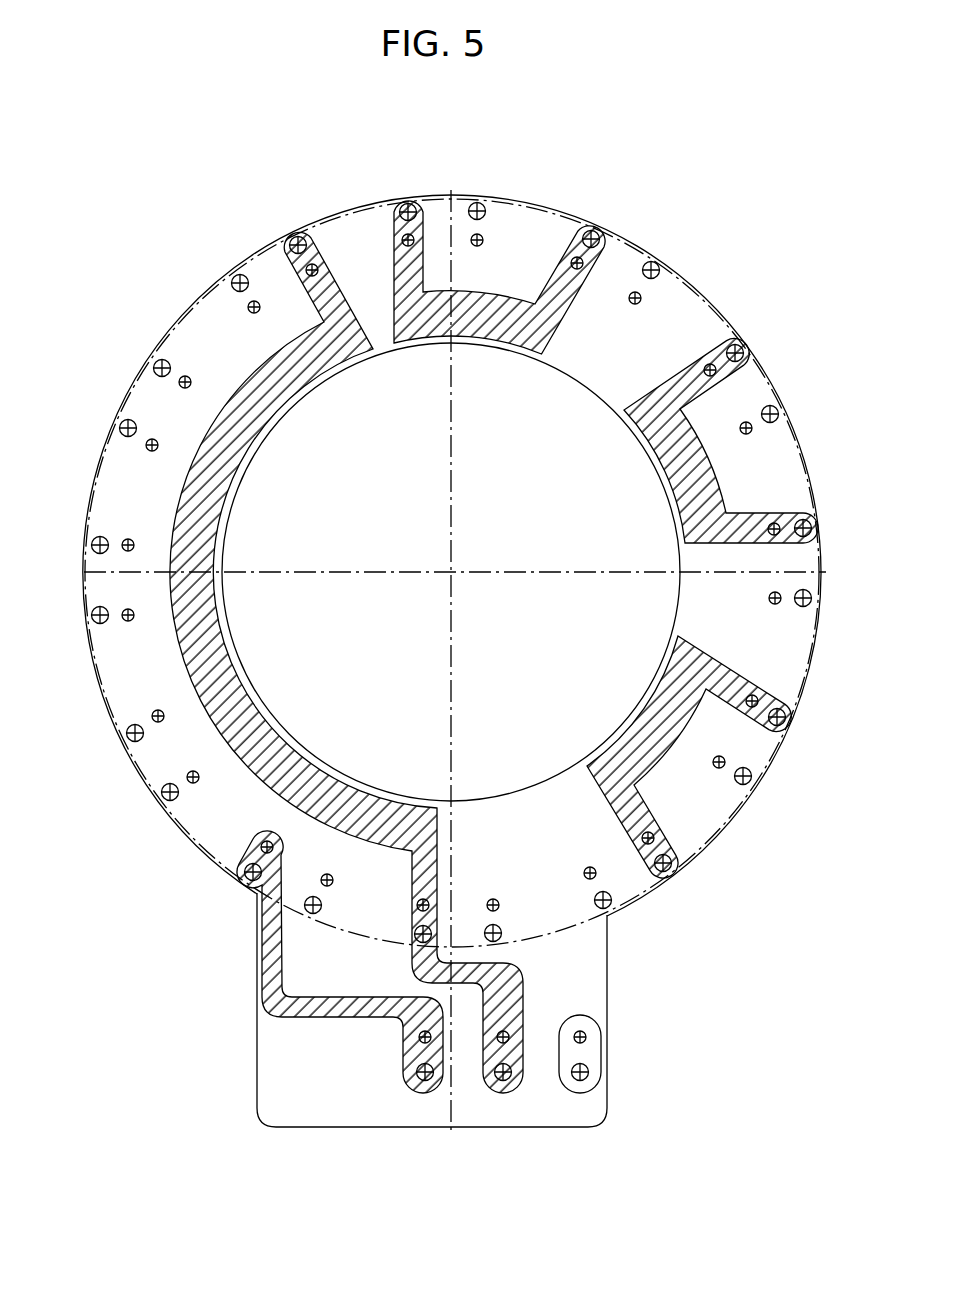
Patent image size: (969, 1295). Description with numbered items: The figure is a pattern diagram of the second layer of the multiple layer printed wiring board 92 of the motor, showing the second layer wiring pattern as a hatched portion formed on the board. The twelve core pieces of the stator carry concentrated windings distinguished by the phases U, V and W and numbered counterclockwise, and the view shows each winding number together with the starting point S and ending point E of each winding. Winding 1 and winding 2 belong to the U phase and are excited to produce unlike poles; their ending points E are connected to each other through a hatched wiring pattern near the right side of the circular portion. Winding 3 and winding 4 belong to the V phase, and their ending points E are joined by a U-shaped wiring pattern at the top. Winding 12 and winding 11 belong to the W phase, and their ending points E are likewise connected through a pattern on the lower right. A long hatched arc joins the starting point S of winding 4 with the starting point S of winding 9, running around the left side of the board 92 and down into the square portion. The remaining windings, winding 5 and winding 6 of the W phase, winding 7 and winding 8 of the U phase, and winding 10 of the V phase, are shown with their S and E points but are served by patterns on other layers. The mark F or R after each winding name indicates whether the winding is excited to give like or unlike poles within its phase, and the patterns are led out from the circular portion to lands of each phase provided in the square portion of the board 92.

The winding number 1 is at (798, 462).
The winding number 2 is at (697, 304).
The winding number 3 is at (538, 213).
The winding number 4 is at (347, 218).
The winding number 5 is at (192, 316).
The winding number 6 is at (95, 479).
The winding number 7 is at (102, 682).
The winding number 8 is at (202, 843).
The winding number 9 is at (363, 923).
The winding number 10 is at (561, 922).
The winding number 11 is at (716, 832).
The winding number 12 is at (815, 658).
The multiple layer printed wiring board (second layer) 92 is at (607, 1117).